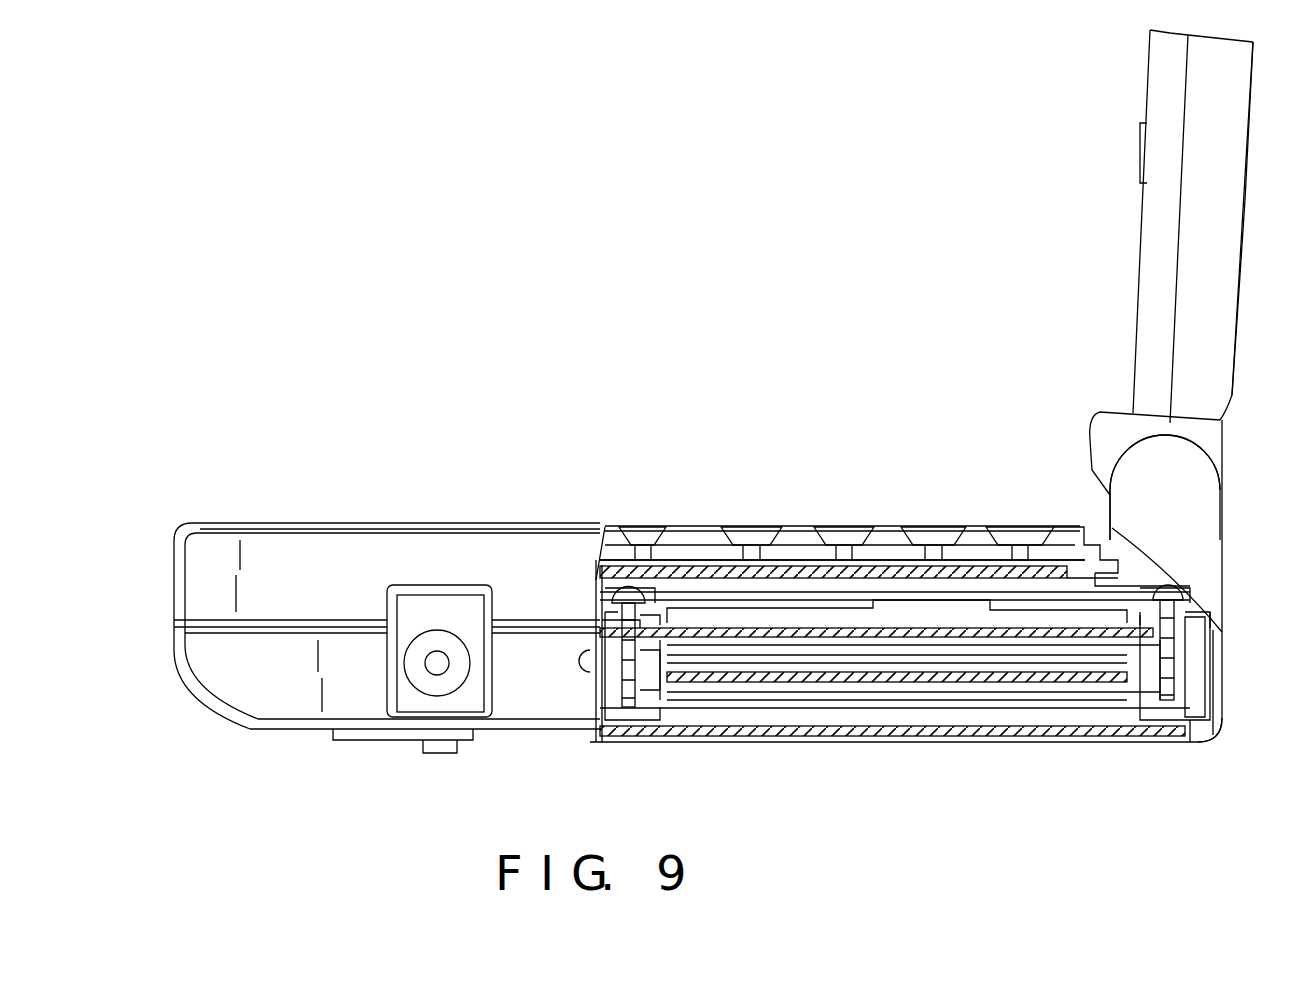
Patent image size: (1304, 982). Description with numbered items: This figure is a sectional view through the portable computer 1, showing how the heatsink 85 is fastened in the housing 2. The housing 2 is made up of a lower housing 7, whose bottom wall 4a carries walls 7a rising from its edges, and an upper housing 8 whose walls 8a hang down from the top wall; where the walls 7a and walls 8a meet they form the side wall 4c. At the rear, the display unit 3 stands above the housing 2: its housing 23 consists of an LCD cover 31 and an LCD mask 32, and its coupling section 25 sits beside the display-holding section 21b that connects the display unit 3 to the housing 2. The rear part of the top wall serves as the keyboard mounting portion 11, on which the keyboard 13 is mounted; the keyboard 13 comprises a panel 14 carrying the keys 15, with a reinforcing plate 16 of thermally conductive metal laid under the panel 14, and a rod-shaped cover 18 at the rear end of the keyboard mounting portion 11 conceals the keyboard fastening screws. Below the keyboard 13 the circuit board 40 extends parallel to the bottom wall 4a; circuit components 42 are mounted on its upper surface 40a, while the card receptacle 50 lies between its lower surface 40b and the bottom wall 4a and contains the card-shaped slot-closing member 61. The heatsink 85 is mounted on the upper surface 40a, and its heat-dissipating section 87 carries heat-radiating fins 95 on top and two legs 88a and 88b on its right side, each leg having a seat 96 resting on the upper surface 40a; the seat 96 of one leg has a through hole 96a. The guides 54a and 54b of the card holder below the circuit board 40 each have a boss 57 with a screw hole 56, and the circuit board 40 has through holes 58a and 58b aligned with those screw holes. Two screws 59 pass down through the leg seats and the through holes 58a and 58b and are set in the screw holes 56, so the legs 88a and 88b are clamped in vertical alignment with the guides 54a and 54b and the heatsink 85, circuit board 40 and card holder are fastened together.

The portable computer 1 is at (1019, 235).
The housing 2 is at (221, 524).
The display unit 3 is at (1146, 100).
The bottom wall 4a is at (1025, 700).
The side wall 4c is at (461, 540).
The lower housing 7 is at (1222, 715).
The walls 7a is at (367, 704).
The upper housing 8 is at (1215, 600).
The walls 8a is at (312, 540).
The keyboard mounting portion 11 is at (1030, 575).
The keyboard 13 is at (680, 526).
The panel 14 is at (790, 575).
The keys 15 is at (776, 535).
The reinforcing plate 16 is at (835, 575).
The cover 18 is at (1070, 580).
The display-holding section 21b is at (1210, 475).
The housing 23 is at (1240, 98).
The coupling section 25 is at (1140, 428).
The LCD cover 31 is at (1233, 220).
The LCD mask 32 is at (1146, 257).
The circuit board 40 is at (910, 640).
The upper surface 40a is at (875, 575).
The lower surface 40b is at (735, 682).
The circuit components 42 is at (712, 640).
The card receptacle 50 is at (965, 736).
The guide 54a is at (605, 700).
The guide 54b is at (1210, 700).
The screw hole 56 is at (600, 660).
The boss 57 is at (630, 710).
The through hole 58a is at (605, 616).
The through hole 58b is at (1215, 625).
The screws 59 is at (615, 600).
The slot-closing member 61 is at (850, 650).
The heatsink 85 is at (815, 612).
The heat-dissipating section 87 is at (985, 575).
The leg 88a is at (1210, 560).
The leg 88b is at (612, 560).
The heat-radiating fins 95 is at (950, 560).
The seat 96 is at (690, 585).
The through hole 96a is at (605, 595).